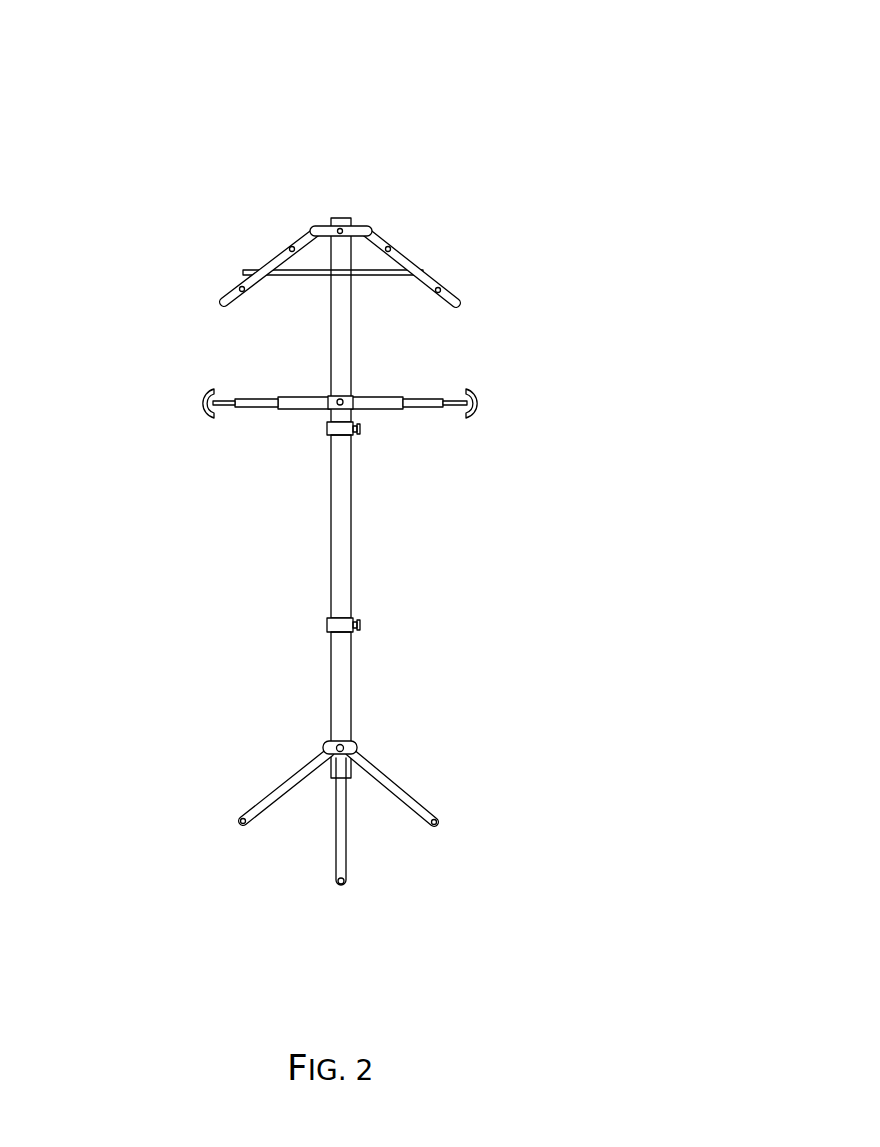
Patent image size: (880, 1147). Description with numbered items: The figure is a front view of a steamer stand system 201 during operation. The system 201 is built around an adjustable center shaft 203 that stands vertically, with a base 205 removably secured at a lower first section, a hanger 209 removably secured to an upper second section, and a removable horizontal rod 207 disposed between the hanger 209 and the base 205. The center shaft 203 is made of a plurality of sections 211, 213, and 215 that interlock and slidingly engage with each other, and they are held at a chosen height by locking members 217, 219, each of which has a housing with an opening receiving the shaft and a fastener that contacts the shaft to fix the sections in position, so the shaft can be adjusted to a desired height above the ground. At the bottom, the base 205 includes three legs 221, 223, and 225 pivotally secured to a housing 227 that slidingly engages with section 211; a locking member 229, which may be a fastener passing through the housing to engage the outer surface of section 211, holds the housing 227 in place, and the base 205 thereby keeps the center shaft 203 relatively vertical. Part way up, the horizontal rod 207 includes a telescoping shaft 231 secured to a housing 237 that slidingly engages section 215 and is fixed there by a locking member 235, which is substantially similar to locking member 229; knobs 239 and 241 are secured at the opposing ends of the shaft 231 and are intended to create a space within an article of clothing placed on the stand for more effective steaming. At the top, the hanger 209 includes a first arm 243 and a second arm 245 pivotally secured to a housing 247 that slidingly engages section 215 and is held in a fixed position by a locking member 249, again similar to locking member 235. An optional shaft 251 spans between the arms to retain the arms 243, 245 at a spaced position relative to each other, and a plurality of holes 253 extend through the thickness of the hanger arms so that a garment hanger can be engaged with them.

The steamer stand system 201 is at (660, 65).
The adjustable center shaft 203 is at (492, 553).
The base 205 is at (144, 700).
The horizontal rod 207 is at (149, 369).
The hanger 209 is at (200, 192).
The section 211 is at (352, 645).
The section 213 is at (352, 528).
The section 215 is at (352, 328).
The locking member 217 is at (328, 432).
The locking member 219 is at (330, 622).
The leg 221 is at (253, 800).
The leg 223 is at (337, 867).
The leg 225 is at (418, 800).
The housing 227 is at (327, 745).
The locking member 229 is at (348, 743).
The telescoping shaft 231 is at (392, 408).
The locking member 235 is at (336, 400).
The housing 237 is at (330, 408).
The knob 239 is at (198, 410).
The knob 241 is at (482, 393).
The first arm 243 is at (244, 277).
The second arm 245 is at (425, 272).
The housing 247 is at (360, 226).
The locking member 249 is at (331, 226).
The shaft 251 is at (360, 275).
The holes 253 is at (445, 291).